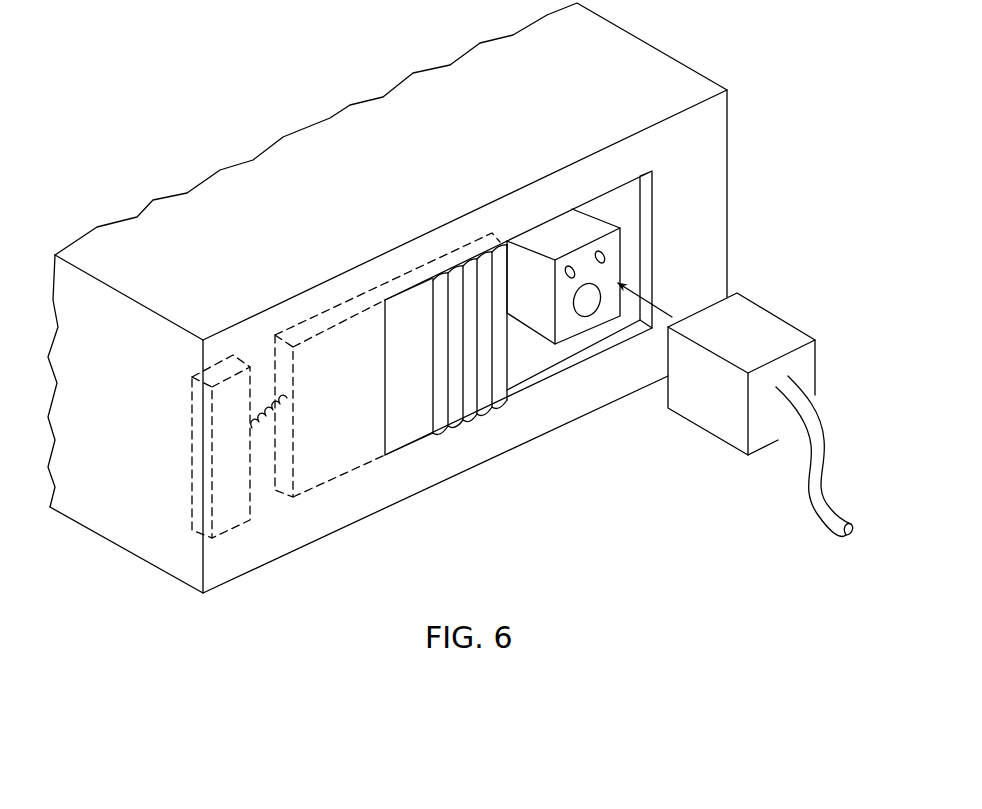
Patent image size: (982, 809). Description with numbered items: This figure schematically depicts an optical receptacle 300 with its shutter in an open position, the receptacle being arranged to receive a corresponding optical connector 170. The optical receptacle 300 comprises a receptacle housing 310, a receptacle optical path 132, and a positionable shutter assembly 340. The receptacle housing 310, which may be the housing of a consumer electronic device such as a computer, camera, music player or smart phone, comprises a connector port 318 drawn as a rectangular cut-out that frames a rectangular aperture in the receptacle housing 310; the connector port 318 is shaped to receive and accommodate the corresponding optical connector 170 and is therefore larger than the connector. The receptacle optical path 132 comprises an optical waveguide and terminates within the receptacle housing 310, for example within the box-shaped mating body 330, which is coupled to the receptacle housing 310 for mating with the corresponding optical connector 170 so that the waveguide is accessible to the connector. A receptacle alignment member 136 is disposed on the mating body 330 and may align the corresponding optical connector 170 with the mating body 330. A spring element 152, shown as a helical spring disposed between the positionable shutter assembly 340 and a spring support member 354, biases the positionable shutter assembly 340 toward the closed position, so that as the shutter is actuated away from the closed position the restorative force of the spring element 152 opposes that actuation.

The optical receptacle 300 is at (767, 139).
The receptacle housing 310 is at (157, 231).
The receptacle optical path 132 is at (575, 264).
The receptacle alignment member 136 is at (590, 305).
The spring element 152 is at (263, 410).
The corresponding optical connector 170 is at (767, 333).
The connector port 318 is at (520, 359).
The mating body 330 is at (600, 252).
The positionable shutter assembly 340 is at (415, 447).
The spring support member 354 is at (227, 517).